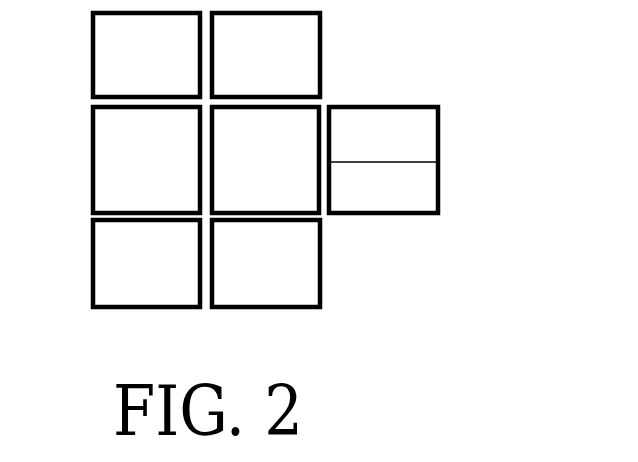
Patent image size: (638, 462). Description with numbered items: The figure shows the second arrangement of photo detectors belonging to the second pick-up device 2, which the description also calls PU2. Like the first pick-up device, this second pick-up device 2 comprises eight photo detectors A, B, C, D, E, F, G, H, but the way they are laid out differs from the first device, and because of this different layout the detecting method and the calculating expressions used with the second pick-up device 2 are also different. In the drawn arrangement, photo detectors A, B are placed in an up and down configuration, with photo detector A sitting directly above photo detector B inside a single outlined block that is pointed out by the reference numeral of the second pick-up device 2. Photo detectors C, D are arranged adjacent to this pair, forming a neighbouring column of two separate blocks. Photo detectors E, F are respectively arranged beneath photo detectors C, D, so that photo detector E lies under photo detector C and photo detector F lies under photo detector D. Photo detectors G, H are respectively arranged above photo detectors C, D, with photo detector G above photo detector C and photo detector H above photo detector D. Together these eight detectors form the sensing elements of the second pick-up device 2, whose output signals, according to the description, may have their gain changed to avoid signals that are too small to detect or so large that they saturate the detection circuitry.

The second pick-up device 2 is at (432, 160).
The photo detector A is at (383, 135).
The photo detector B is at (383, 186).
The photo detector C is at (265, 160).
The photo detector D is at (146, 160).
The photo detector E is at (266, 263).
The photo detector F is at (146, 263).
The photo detector G is at (266, 55).
The photo detector H is at (146, 55).